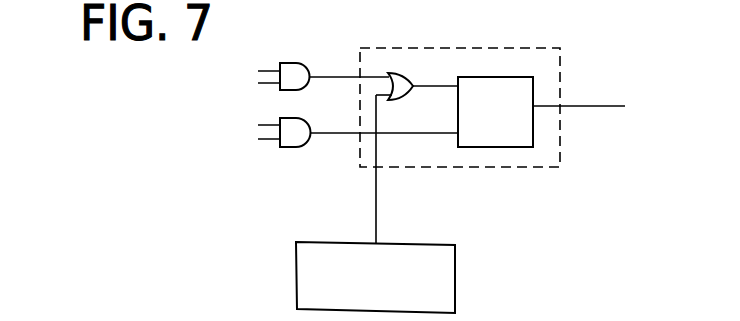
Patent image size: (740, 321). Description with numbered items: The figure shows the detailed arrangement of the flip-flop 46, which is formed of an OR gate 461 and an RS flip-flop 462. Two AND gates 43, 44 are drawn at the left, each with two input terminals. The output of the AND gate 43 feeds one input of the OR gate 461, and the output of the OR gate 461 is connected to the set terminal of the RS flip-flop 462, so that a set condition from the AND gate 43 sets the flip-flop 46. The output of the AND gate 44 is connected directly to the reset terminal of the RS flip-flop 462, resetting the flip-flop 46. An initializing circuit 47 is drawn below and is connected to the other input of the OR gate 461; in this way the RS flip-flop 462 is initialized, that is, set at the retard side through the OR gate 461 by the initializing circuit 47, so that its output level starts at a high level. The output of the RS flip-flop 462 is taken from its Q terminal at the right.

The AND gate 43 is at (298, 63).
The AND gate 44 is at (292, 147).
The flip-flop 46 is at (518, 168).
The OR gate 461 is at (400, 72).
The RS flip-flop 462 is at (503, 77).
The initializing circuit 47 is at (455, 276).